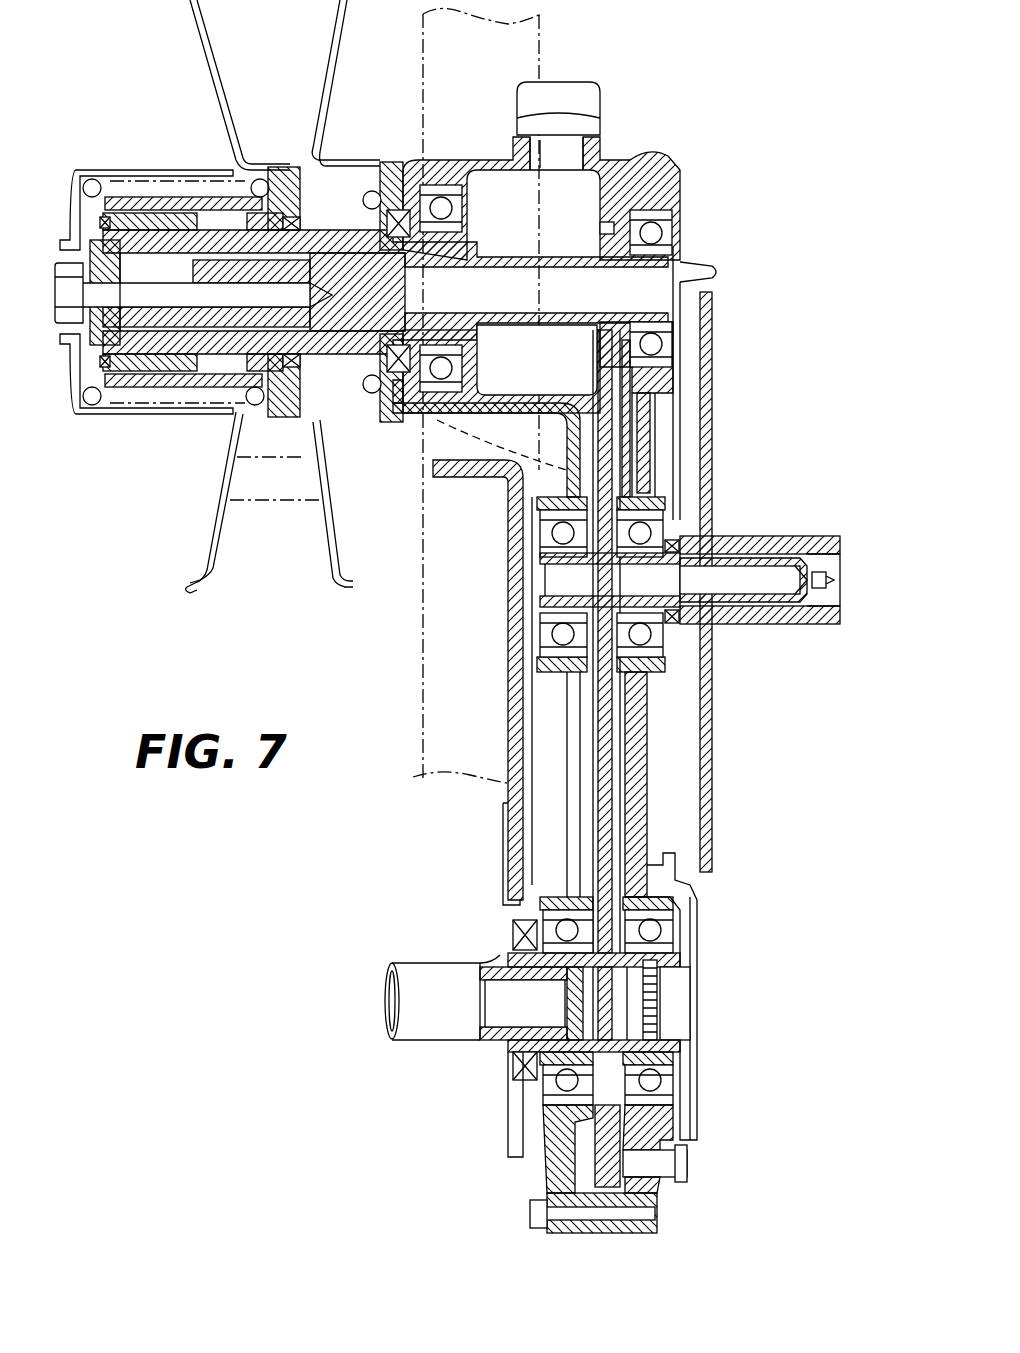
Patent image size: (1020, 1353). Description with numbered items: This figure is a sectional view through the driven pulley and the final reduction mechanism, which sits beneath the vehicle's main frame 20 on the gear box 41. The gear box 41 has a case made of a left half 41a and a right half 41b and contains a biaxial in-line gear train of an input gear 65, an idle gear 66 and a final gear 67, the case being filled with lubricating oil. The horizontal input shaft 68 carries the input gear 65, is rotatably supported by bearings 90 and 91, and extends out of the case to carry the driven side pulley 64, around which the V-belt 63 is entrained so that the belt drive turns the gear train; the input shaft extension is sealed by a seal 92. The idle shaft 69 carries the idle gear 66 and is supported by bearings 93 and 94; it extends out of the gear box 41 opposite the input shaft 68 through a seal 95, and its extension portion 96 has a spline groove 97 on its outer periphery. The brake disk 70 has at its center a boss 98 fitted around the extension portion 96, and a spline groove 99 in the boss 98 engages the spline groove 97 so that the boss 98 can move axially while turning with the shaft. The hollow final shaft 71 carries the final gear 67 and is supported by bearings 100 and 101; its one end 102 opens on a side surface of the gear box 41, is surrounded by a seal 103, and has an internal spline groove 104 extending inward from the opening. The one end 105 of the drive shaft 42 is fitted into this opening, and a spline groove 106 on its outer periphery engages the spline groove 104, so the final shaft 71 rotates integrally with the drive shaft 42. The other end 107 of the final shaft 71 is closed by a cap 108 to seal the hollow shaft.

The main frame 20 is at (413, 650).
The gear box 41 is at (708, 238).
The left half case 41a is at (497, 155).
The right half case 41b is at (633, 156).
The drive shaft 42 is at (418, 1046).
The V-belt 63 is at (258, 497).
The driven side pulley 64 is at (196, 592).
The input gear 65 is at (607, 228).
The idle gear 66 is at (598, 378).
The final gear 67 is at (603, 878).
The input shaft 68 is at (524, 257).
The idle shaft 69 is at (603, 562).
The brake disk 70 is at (712, 443).
The final shaft 71 is at (610, 960).
The bearing 90 is at (462, 374).
The bearing 91 is at (660, 342).
The seal 92 is at (398, 210).
The bearing 93 is at (540, 547).
The bearing 94 is at (668, 515).
The seal 95 is at (685, 550).
The extension portion 96 is at (840, 616).
The spline groove 97 is at (743, 580).
The boss 98 is at (793, 537).
The spline groove 99 is at (826, 575).
The bearing 100 is at (560, 913).
The bearing 101 is at (676, 912).
The one end of final shaft 102 is at (510, 960).
The seal 103 is at (518, 935).
The spline groove 104 is at (578, 990).
The one end of drive shaft 105 is at (478, 1000).
The spline groove 106 is at (552, 980).
The other end of final shaft 107 is at (690, 982).
The cap 108 is at (688, 1002).